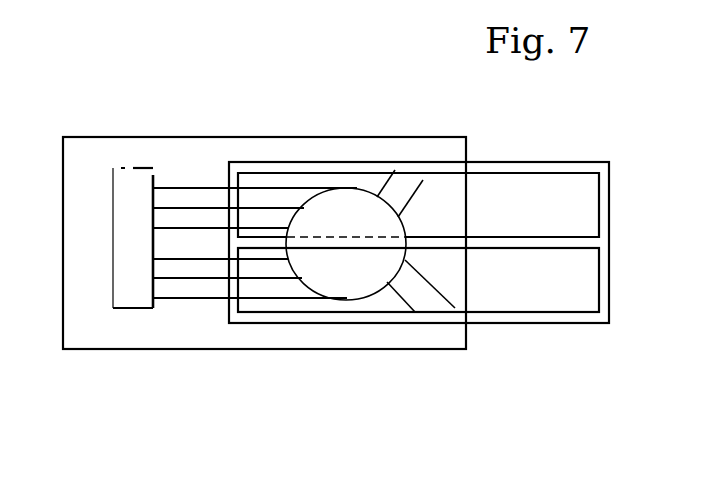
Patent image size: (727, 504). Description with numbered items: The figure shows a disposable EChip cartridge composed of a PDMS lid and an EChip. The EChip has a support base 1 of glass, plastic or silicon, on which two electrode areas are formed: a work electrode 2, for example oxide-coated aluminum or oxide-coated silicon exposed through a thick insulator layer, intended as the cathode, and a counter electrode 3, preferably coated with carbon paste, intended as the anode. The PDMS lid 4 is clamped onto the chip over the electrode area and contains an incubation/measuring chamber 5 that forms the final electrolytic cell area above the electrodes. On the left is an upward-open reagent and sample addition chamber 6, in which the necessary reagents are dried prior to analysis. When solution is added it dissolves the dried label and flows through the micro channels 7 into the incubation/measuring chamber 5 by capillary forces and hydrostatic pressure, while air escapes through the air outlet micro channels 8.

The EChip support base 1 is at (601, 326).
The work electrode 2 is at (525, 205).
The counter electrode 3 is at (555, 292).
The PDMS lid 4 is at (173, 157).
The incubation/measuring chamber 5 is at (357, 282).
The reagent and sample addition chamber 6 is at (123, 262).
The micro channels 7 is at (185, 300).
The air outlet micro channels 8 is at (426, 202).